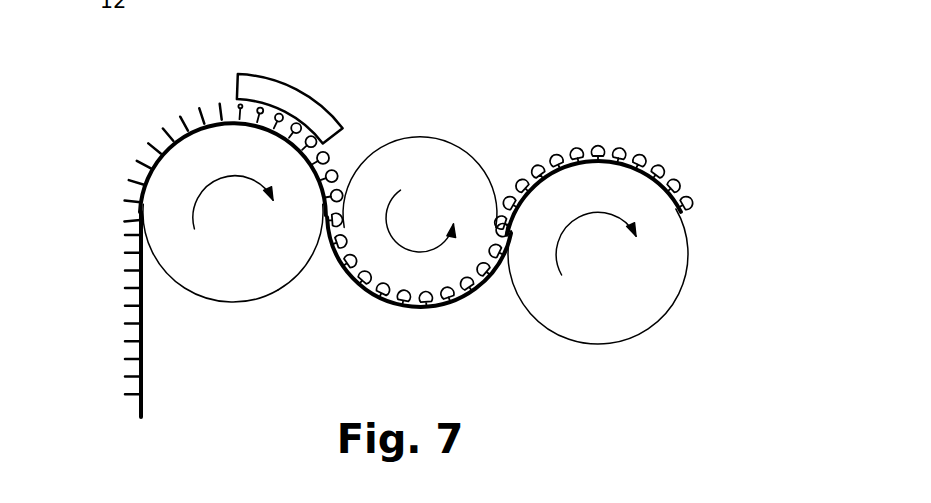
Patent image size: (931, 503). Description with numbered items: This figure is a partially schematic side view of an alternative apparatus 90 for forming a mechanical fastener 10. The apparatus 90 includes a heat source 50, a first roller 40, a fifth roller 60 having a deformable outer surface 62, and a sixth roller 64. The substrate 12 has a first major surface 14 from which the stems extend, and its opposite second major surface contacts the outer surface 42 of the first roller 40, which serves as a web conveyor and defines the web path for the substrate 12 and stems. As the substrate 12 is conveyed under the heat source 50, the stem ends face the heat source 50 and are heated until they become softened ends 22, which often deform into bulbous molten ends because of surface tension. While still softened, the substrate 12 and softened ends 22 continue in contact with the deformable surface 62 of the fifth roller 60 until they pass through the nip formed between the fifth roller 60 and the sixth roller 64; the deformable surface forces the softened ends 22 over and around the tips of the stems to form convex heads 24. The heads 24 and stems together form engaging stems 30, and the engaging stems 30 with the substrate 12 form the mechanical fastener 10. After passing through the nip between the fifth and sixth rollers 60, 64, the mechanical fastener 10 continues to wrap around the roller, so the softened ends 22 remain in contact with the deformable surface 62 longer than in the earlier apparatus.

The mechanical fastener 10 is at (683, 140).
The substrate 12 is at (128, 415).
The first major surface 14 is at (140, 313).
The softened ends 22 is at (332, 176).
The convex heads 24 is at (576, 147).
The engaging stems 30 is at (636, 138).
The first roller 40 is at (230, 295).
The outer surface 42 is at (295, 282).
The heat source 50 is at (293, 83).
The fifth roller 60 is at (408, 283).
The deformable outer surface 62 is at (465, 152).
The sixth roller 64 is at (588, 330).
The apparatus 90 is at (123, 112).